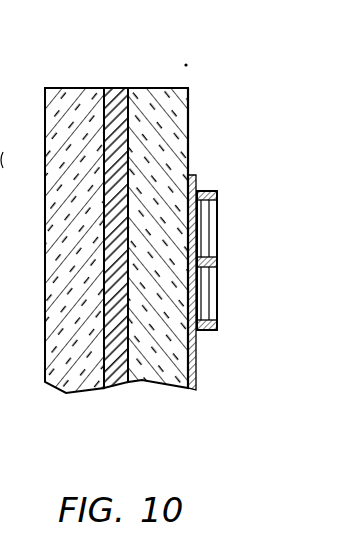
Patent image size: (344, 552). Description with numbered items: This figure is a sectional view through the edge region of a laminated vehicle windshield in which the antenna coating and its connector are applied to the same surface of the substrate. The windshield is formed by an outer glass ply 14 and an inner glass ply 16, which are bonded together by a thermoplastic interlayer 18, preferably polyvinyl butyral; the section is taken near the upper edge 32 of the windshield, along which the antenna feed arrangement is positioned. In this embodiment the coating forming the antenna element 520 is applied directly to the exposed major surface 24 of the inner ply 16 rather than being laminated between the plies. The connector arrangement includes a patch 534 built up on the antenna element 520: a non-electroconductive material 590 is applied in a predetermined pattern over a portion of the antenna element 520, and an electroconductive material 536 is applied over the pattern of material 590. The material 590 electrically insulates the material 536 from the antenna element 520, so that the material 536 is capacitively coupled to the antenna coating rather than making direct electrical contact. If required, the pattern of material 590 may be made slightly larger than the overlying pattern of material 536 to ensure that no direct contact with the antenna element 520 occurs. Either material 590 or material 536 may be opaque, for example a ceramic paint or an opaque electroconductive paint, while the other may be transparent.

The outer glass ply 14 is at (72, 395).
The inner glass ply 16 is at (163, 386).
The thermoplastic interlayer 18 is at (122, 384).
The major surface of inner ply 24 is at (188, 127).
The upper edge of windshield 32 is at (66, 88).
The antenna element 520 is at (196, 371).
The patch 534 is at (218, 296).
The electroconductive material 536 is at (234, 234).
The non-electroconductive material 590 is at (200, 191).